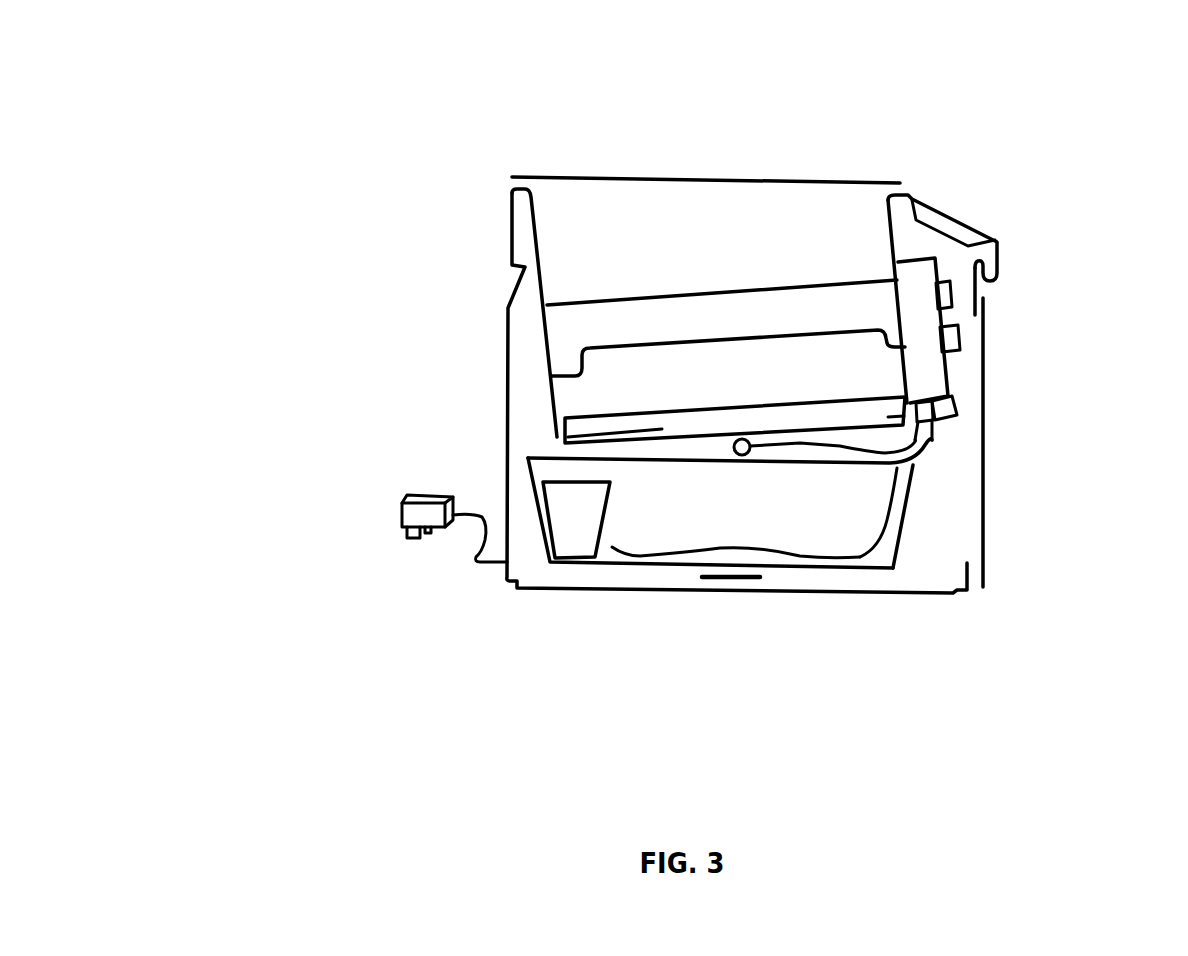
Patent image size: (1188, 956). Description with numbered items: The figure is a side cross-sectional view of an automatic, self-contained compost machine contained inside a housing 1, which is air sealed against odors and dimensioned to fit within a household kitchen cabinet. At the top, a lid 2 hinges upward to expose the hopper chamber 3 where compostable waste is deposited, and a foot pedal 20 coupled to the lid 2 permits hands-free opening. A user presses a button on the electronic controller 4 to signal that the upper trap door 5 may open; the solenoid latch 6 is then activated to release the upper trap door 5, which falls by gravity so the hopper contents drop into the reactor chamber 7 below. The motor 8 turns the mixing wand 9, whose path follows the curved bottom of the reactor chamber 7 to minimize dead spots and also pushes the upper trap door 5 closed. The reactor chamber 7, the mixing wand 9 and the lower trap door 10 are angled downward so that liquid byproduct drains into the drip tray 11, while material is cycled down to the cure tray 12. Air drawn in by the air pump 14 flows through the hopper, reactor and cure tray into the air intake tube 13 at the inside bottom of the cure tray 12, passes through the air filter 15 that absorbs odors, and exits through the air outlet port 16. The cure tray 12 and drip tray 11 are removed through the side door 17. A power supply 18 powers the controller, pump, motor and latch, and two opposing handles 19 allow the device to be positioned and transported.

The housing 1 is at (525, 223).
The lid 2 is at (627, 177).
The hopper chamber 3 is at (675, 217).
The electronic controller 4 is at (967, 222).
The upper trap door 5 is at (718, 290).
The solenoid latch 6 is at (945, 298).
The reactor chamber 7 is at (795, 312).
The motor 8 is at (955, 343).
The mixing wand 9 is at (575, 352).
The lower trap door 10 is at (580, 417).
The drip tray 11 is at (582, 532).
The cure tray 12 is at (685, 562).
The air intake tube 13 is at (882, 553).
The air pump 14 is at (948, 408).
The air filter 15 is at (922, 363).
The air outlet port 16 is at (750, 450).
The side door 17 is at (985, 500).
The power supply 18 is at (385, 530).
The handles 19 is at (515, 273).
The foot pedal 20 is at (745, 580).